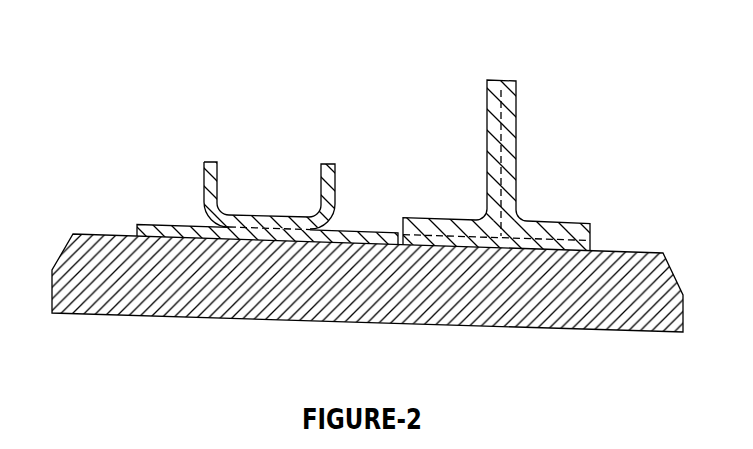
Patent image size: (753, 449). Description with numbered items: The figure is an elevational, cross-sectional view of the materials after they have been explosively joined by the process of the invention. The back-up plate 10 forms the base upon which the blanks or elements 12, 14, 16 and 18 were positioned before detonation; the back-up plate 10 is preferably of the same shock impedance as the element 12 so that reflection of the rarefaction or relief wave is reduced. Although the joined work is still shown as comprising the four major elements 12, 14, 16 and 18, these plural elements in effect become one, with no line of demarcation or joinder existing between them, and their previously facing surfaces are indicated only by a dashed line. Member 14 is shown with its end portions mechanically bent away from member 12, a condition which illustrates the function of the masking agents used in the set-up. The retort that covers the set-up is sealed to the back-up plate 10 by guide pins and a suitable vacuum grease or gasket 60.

The back-up plate 10 is at (402, 302).
The element 12 is at (191, 226).
The member 14 is at (321, 202).
The element 16 is at (488, 165).
The element 18 is at (508, 166).
The vacuum grease or gasket 60 is at (294, 228).